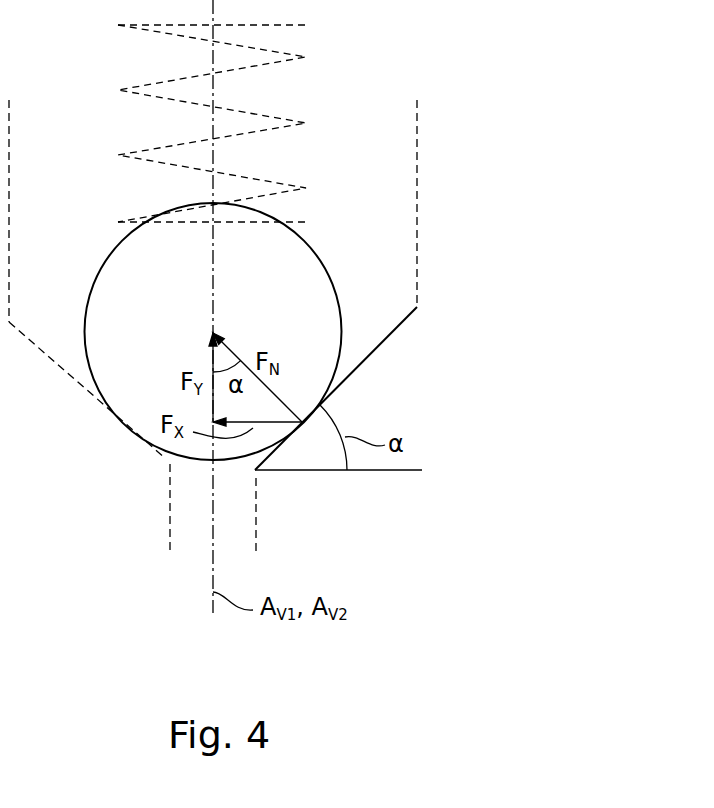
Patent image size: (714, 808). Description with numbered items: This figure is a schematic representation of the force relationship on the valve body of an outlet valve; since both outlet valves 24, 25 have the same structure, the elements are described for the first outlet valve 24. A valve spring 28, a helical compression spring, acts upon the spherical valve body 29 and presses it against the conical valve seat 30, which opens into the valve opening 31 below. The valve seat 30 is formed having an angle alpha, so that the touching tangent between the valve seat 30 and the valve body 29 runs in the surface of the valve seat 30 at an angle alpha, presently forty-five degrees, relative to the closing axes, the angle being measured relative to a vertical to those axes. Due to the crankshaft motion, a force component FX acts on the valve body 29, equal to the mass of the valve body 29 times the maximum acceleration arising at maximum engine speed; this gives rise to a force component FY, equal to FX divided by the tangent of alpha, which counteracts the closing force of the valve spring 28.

The first outlet valve 24 is at (314, 285).
The second outlet valve 25 is at (463, 148).
The valve spring 28 is at (290, 57).
The spherical valve body 29 is at (288, 272).
The conical valve seat 30 is at (362, 343).
The valve opening 31 is at (185, 507).